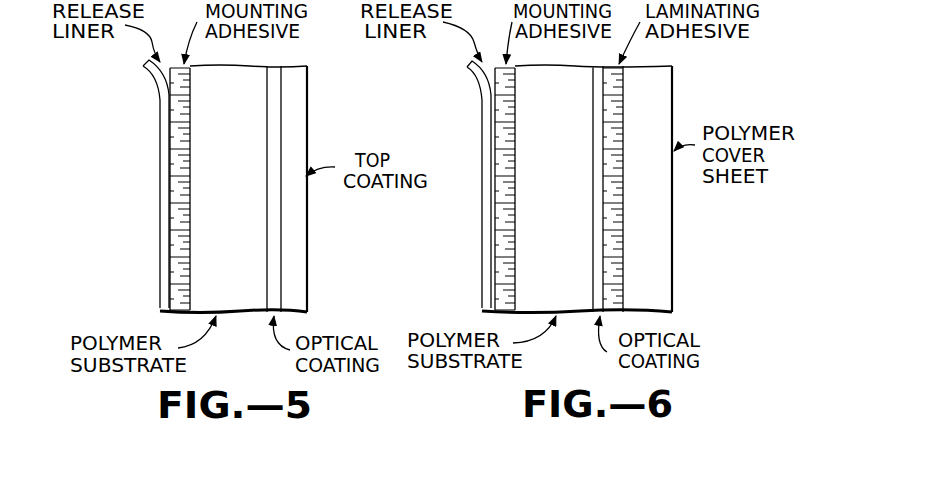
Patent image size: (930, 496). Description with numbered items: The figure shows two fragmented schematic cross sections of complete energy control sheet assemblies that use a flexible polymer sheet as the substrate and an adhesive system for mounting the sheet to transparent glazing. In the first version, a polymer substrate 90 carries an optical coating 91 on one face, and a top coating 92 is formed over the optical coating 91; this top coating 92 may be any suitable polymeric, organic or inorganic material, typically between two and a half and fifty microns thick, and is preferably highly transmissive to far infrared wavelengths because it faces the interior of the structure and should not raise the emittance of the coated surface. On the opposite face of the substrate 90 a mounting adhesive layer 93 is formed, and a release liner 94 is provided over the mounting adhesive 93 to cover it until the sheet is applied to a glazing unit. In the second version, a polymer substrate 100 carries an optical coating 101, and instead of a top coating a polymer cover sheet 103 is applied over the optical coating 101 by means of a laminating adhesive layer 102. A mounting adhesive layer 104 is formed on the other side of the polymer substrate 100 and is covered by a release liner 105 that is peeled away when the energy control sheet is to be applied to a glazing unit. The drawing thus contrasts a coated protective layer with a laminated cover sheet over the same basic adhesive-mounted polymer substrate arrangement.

In FIG. 5, the substrate 90 is at (258, 108).
In FIG. 5, the optical coating 91 is at (283, 130).
In FIG. 5, the top coating 92 is at (300, 271).
In FIG. 5, the mounting adhesive layer 93 is at (173, 139).
In FIG. 5, the release liner 94 is at (155, 83).
In FIG. 6, the polymer substrate 100 is at (577, 218).
In FIG. 6, the optical coating 101 is at (602, 249).
In FIG. 6, the laminating adhesive layer 102 is at (620, 190).
In FIG. 6, the polymer cover sheet 103 is at (665, 290).
In FIG. 6, the mounting adhesive layer 104 is at (503, 217).
In FIG. 6, the release liner 105 is at (488, 258).